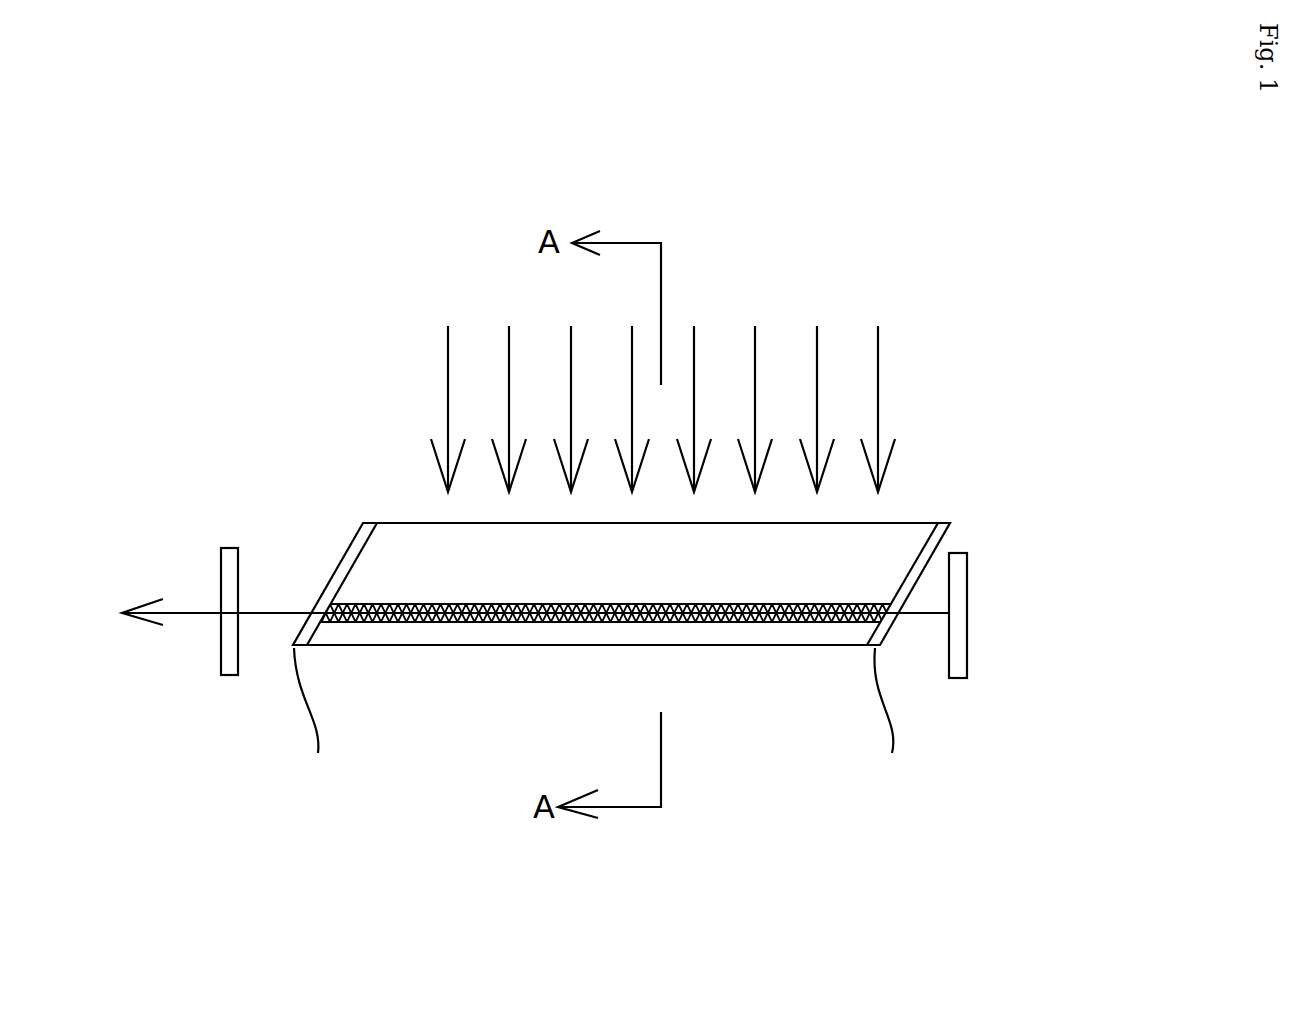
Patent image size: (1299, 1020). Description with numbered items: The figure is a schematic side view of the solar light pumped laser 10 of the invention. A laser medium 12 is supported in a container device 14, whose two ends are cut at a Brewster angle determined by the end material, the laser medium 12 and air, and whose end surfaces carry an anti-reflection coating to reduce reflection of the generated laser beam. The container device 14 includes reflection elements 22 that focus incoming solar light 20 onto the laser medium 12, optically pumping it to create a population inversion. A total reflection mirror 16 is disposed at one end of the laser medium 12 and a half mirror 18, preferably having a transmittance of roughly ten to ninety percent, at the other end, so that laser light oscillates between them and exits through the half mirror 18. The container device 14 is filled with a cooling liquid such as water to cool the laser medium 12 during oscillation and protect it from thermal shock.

The solar light pumped laser 10 is at (575, 462).
The laser medium 12 is at (378, 607).
The container device 14 is at (383, 575).
The total reflection mirror 16 is at (955, 592).
The half mirror 18 is at (231, 557).
The solar light 20 is at (881, 405).
The reflection elements 22 is at (533, 626).